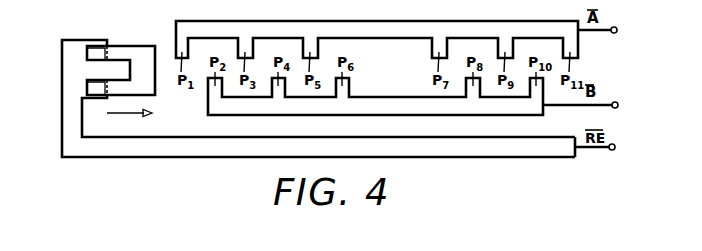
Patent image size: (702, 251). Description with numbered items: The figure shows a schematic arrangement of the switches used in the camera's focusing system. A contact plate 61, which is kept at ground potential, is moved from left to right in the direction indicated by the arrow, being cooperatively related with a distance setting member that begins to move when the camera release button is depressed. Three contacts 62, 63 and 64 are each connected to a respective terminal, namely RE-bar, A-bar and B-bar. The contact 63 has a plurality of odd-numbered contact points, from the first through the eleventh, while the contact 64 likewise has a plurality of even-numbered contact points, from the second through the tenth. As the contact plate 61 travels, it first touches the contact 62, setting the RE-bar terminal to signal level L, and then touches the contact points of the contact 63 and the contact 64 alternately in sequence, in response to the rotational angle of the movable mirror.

The contact plate 61 is at (147, 50).
The contact 62 is at (72, 49).
The contact 63 is at (420, 30).
The contact 64 is at (420, 86).